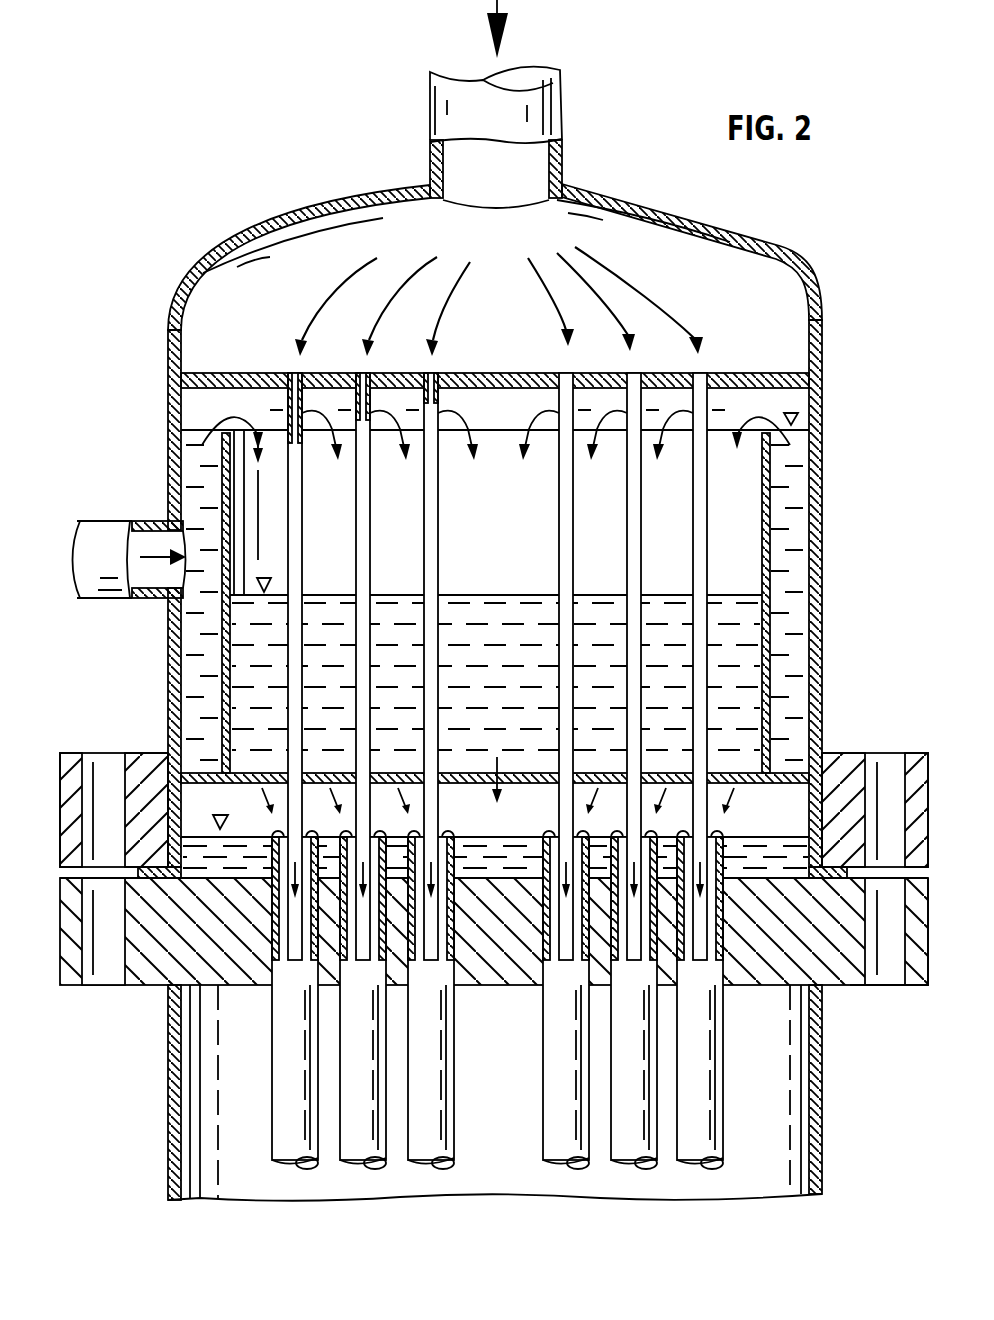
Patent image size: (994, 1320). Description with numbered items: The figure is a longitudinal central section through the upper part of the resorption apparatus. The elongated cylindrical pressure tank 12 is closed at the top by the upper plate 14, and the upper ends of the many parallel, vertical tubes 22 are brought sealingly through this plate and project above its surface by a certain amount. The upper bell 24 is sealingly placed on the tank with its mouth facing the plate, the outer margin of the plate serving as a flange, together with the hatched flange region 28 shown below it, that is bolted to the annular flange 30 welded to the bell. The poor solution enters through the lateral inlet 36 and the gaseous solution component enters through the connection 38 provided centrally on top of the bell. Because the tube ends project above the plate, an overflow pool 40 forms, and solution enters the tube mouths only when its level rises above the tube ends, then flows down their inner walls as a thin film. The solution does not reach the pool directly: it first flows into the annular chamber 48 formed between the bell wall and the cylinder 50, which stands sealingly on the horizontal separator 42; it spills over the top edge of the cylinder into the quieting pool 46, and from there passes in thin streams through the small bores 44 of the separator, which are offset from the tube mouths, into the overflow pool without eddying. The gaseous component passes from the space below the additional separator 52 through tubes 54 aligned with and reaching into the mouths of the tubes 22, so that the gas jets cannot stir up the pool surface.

The pressure tank 12 is at (172, 1115).
The upper plate 14 is at (918, 985).
The tubes 22 is at (272, 1014).
The upper bell 24 is at (817, 438).
The tube plate flange 28 is at (135, 985).
The annular flange 30 is at (75, 752).
The inlet 36 is at (115, 521).
The connection 38 is at (562, 143).
The overflow pool 40 is at (776, 846).
The horizontal separator 42 is at (780, 770).
The bores 44 is at (759, 792).
The quieting pool 46 is at (600, 605).
The annular chamber 48 is at (790, 620).
The cylinder 50 is at (770, 530).
The additional separator 52 is at (212, 375).
The tubes 54 is at (360, 517).